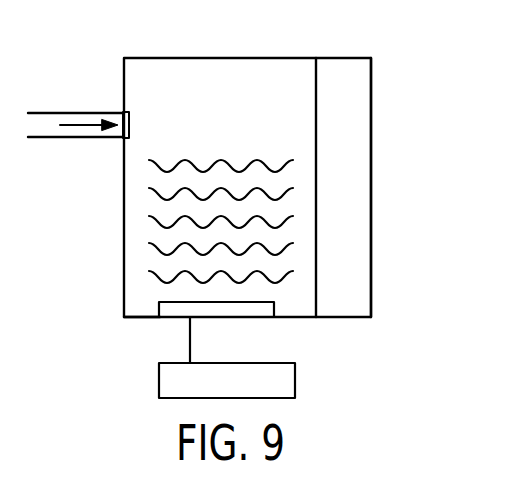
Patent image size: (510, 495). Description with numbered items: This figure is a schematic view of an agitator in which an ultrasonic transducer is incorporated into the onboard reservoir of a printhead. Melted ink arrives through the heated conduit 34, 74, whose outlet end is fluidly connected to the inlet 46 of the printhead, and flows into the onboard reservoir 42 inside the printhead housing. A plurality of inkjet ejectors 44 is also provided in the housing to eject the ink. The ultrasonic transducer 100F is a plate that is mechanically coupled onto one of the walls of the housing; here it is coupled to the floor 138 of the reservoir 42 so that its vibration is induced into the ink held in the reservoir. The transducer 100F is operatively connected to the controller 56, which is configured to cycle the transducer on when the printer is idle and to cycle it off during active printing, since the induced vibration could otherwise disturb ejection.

The onboard reservoir 42 is at (230, 76).
The inkjet ejectors 44 is at (372, 90).
The heated conduit 34 is at (76, 96).
The inlet conduit 74 is at (75, 112).
The inlet 46 is at (130, 127).
The ultrasonic transducer 100F is at (165, 302).
The floor 138 is at (136, 316).
The controller 56 is at (297, 380).